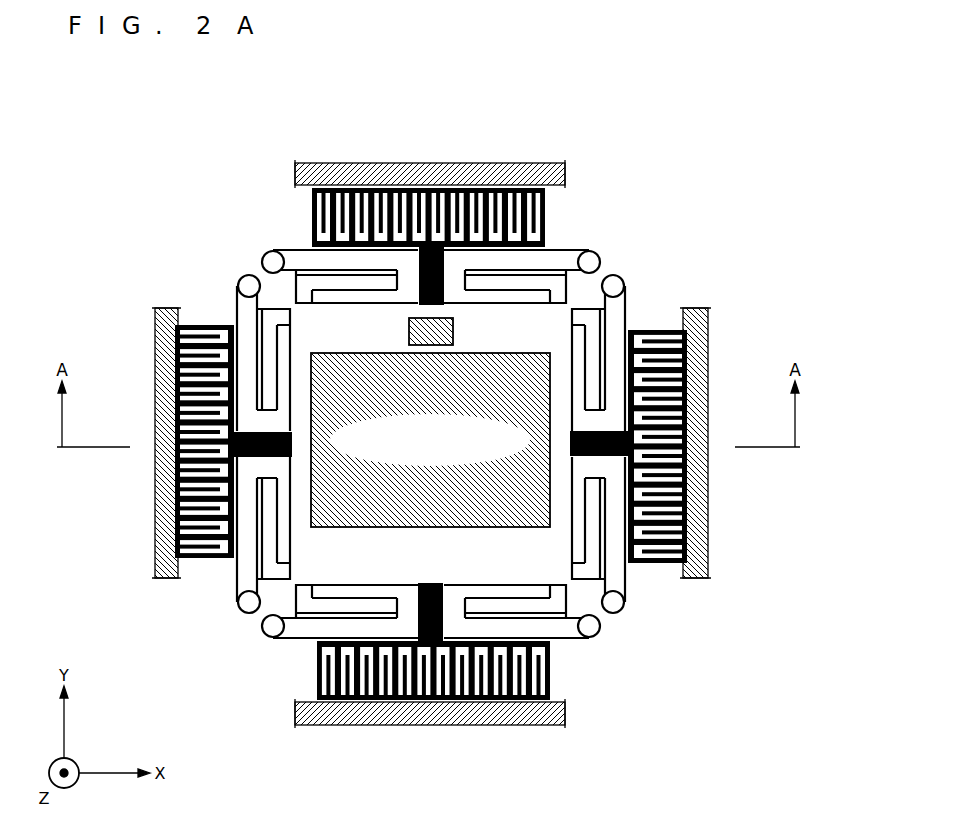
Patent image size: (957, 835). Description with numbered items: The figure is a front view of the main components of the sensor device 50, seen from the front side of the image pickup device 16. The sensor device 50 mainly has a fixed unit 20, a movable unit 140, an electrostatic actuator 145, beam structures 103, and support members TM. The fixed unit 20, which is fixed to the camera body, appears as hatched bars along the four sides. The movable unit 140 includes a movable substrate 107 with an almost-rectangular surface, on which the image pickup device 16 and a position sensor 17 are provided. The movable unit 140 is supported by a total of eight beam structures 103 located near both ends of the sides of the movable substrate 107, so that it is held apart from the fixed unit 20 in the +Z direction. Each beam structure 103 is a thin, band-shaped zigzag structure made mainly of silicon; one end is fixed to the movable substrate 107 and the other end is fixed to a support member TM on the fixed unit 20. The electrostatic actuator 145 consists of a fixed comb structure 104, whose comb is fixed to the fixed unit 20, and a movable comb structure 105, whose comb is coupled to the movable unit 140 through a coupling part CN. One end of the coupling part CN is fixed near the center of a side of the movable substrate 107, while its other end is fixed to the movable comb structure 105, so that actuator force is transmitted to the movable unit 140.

The sensor device 50 is at (101, 124).
The fixed unit 20 is at (435, 163).
The electrostatic actuator 145 is at (241, 121).
The fixed comb structure 104 is at (310, 192).
The movable comb structure 105 is at (312, 243).
The beam structure 103 is at (287, 250).
The movable substrate 107 is at (312, 318).
The movable unit 140 is at (548, 326).
The image pickup device 16 is at (430, 528).
The position sensor 17 is at (456, 331).
The support member TM is at (262, 268).
The coupling part CN is at (428, 306).